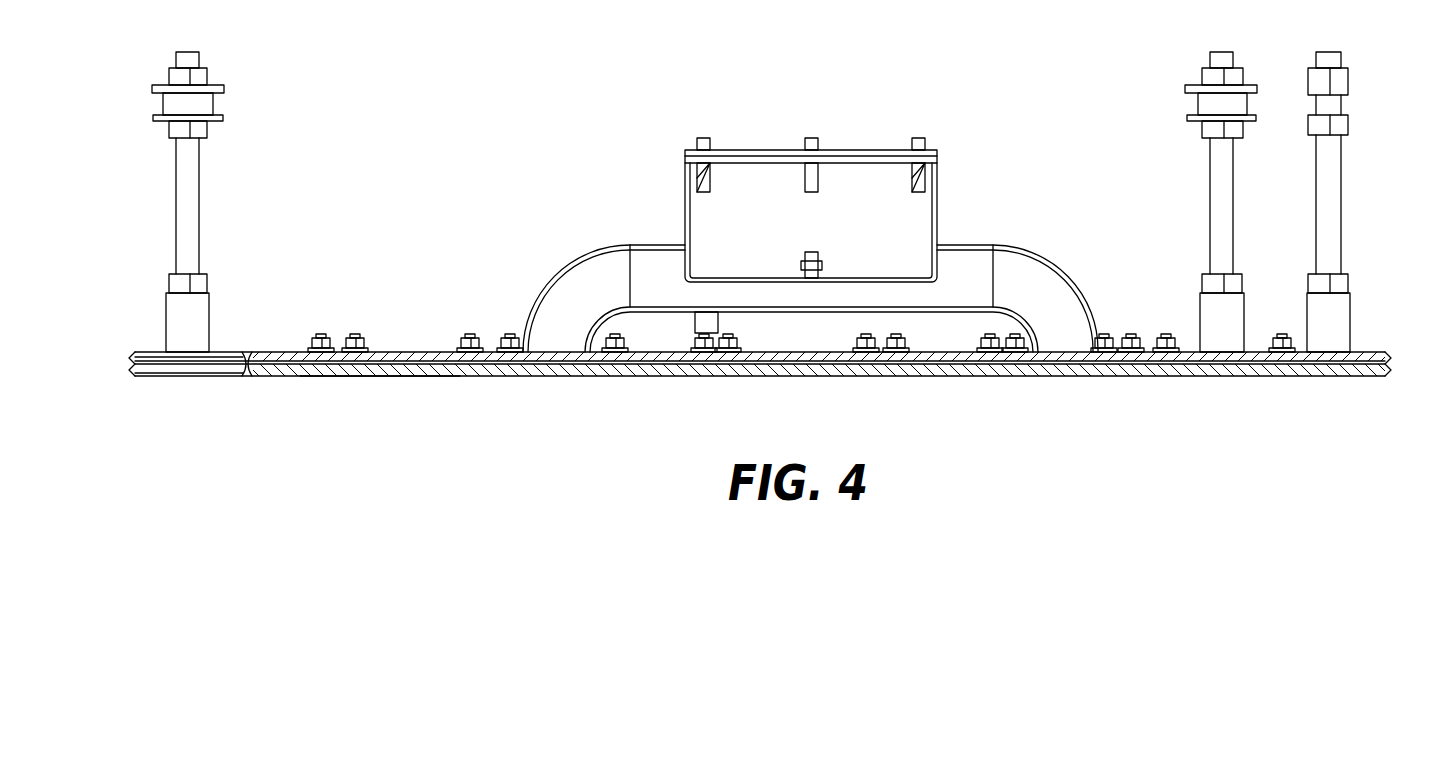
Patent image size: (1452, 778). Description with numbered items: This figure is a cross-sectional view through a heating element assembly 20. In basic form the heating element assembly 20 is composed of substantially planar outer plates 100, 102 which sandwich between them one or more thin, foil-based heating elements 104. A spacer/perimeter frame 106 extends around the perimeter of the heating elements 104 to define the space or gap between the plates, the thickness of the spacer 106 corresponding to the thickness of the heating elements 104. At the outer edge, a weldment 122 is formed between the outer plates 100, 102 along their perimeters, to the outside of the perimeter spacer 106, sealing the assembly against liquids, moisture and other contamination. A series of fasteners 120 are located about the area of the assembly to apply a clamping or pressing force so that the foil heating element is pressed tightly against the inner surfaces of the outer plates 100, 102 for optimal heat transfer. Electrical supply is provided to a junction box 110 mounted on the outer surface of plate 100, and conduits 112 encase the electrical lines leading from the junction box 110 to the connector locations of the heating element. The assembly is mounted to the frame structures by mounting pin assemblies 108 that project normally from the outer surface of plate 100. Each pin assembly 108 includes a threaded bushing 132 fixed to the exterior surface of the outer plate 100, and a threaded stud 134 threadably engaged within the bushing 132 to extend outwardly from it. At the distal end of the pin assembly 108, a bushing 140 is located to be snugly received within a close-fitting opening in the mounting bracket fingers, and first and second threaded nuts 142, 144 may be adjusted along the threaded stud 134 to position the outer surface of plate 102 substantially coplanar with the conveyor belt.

The heating element assembly 20 is at (977, 93).
The outer plate 100 is at (758, 354).
The outer plate 102 is at (305, 372).
The foil-based heating element 104 is at (378, 372).
The spacer/perimeter frame 106 is at (250, 370).
The mounting pin assembly 108 is at (200, 190).
The junction box 110 is at (685, 195).
The conduit 112 is at (557, 280).
The fastener 120 is at (352, 336).
The weldment 122 is at (130, 365).
The threaded bushing 132 is at (170, 322).
The threaded stud 134 is at (176, 210).
The bushing 140 is at (163, 104).
The first threaded nut 142 is at (169, 128).
The second threaded nut 144 is at (169, 74).